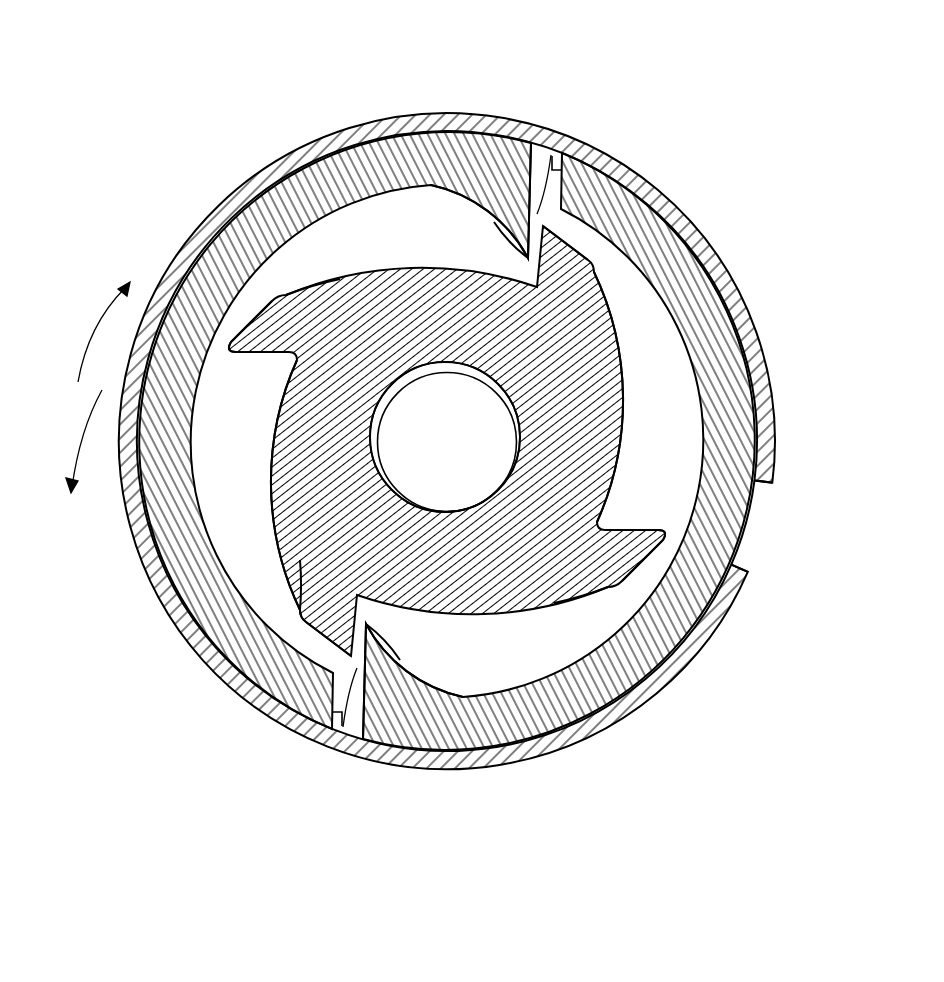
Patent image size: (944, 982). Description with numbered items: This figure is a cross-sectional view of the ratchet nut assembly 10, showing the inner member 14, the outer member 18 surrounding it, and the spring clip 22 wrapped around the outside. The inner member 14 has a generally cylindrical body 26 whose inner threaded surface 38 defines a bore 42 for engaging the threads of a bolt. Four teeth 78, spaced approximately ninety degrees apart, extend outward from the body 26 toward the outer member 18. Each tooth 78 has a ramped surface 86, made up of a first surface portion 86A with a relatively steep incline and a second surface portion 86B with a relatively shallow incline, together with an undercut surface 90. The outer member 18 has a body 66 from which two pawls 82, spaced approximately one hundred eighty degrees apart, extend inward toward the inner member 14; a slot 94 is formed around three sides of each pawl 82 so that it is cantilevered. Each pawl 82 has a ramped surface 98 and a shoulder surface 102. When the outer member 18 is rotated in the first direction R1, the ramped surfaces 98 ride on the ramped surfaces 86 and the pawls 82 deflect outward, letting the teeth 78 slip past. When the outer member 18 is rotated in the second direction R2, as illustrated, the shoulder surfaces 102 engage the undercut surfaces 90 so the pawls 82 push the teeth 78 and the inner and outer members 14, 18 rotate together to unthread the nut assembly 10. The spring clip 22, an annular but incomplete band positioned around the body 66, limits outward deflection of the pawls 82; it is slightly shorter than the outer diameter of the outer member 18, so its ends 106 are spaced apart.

The ratchet nut assembly 10 is at (619, 58).
The inner member 14 is at (598, 390).
The outer member 18 is at (208, 603).
The spring clip 22 is at (262, 707).
The body 26 is at (278, 495).
The inner threaded surface 38 is at (494, 490).
The bore 42 is at (431, 382).
The body 66 is at (725, 523).
The teeth 78 is at (570, 250).
The pawls 82 is at (470, 150).
The ramped surface 86 is at (605, 293).
The first surface portion 86A is at (300, 293).
The second surface portion 86B is at (248, 320).
The undercut surface 90 is at (257, 361).
The slot 94 is at (556, 178).
The ramped surface 98 is at (508, 240).
The shoulder surface 102 is at (551, 155).
The ends 106 is at (774, 489).
The first direction R1 is at (102, 332).
The second direction R2 is at (84, 441).